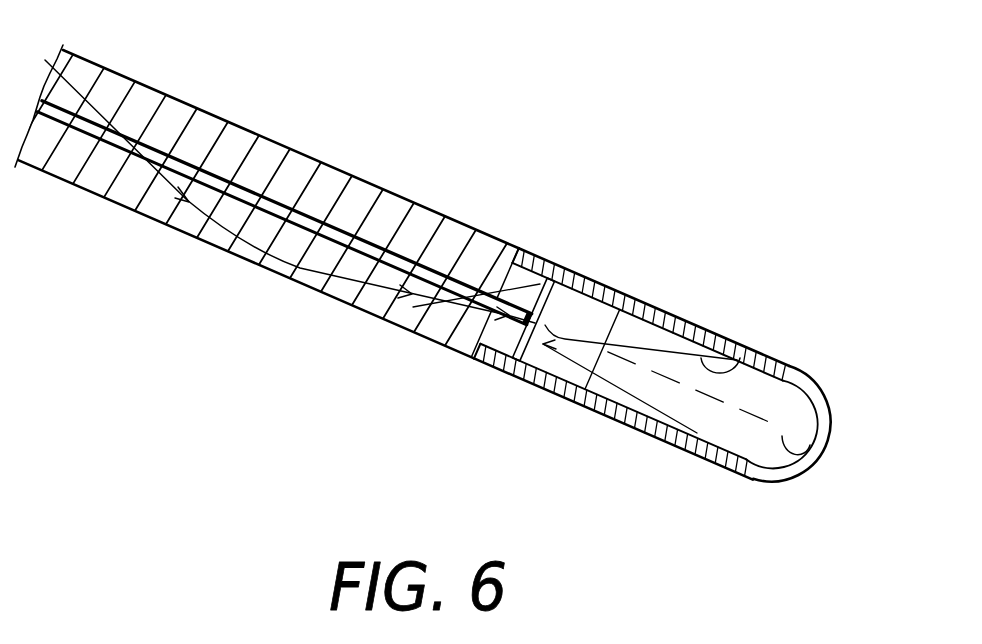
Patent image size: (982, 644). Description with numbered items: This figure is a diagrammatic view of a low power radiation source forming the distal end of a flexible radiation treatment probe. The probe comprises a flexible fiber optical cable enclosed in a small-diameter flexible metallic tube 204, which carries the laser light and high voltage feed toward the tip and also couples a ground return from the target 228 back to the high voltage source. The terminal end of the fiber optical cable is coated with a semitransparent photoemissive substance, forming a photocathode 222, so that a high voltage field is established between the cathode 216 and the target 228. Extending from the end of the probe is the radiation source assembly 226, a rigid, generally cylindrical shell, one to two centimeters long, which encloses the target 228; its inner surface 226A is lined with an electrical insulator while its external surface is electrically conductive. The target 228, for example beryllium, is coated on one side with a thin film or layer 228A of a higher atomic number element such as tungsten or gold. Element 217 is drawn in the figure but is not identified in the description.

The flexible metallic tube 204 is at (118, 73).
The cathode 216 is at (537, 305).
The lens plate 217 is at (605, 285).
The photocathode 222 is at (653, 312).
The radiation source assembly 226 is at (707, 457).
The inner surface 226A is at (737, 356).
The target 228 is at (823, 390).
The thin film or layer 228A is at (812, 458).